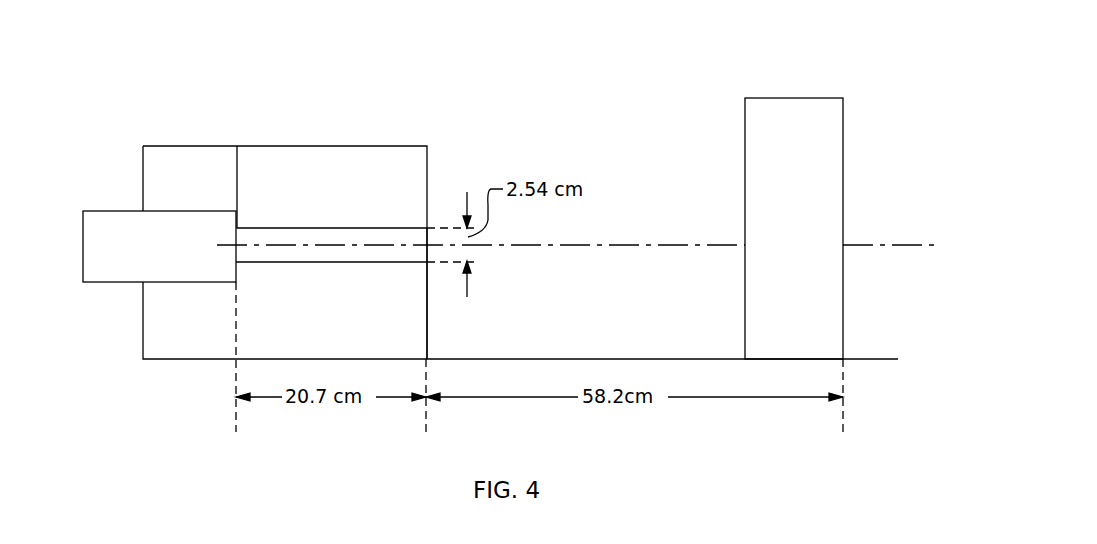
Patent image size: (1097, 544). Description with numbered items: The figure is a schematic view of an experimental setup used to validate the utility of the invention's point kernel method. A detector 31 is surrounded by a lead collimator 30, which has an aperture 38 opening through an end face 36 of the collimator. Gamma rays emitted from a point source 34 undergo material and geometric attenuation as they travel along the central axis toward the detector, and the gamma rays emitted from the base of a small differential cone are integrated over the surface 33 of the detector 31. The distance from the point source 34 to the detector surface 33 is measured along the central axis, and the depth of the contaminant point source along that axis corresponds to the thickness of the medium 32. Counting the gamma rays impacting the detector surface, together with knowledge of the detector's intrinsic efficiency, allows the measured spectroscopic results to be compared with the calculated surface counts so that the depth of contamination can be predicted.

The lead collimator 30 is at (392, 146).
The detector 31 is at (121, 211).
The medium 32 is at (801, 98).
The surface of the detector 33 is at (237, 232).
The point source 34 is at (845, 245).
The end face of the collimator 36 is at (427, 318).
The aperture 38 is at (407, 228).